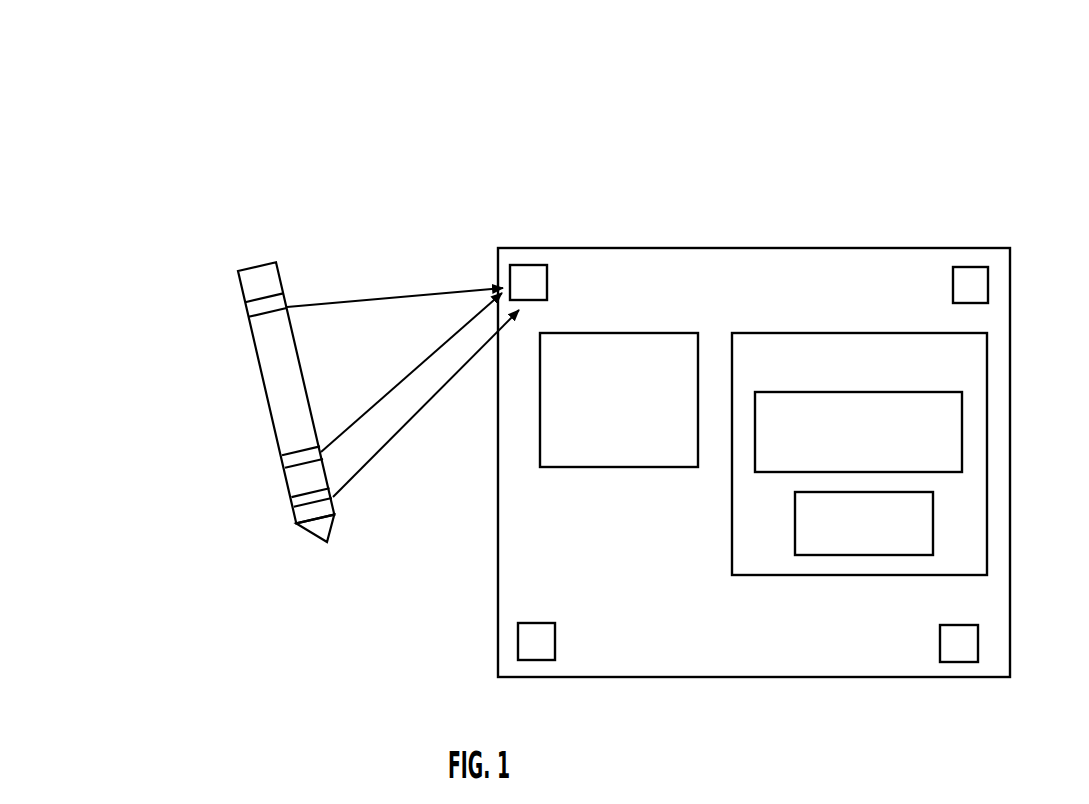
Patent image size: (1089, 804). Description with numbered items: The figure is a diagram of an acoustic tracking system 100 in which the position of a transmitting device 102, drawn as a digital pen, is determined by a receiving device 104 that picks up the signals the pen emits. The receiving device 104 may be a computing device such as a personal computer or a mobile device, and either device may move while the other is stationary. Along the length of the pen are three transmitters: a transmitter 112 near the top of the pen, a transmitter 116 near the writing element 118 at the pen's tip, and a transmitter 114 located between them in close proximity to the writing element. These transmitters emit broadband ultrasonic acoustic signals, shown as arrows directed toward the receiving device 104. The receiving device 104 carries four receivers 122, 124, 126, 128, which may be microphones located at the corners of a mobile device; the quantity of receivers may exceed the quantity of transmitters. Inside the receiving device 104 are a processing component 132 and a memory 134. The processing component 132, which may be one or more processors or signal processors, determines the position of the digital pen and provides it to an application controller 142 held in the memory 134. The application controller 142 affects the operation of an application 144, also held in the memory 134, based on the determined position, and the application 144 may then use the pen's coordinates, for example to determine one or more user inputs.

The acoustic tracking system 100 is at (102, 103).
The transmitting device 102 is at (257, 267).
The receiving device 104 is at (640, 247).
The transmitter 112 is at (250, 317).
The transmitter 114 is at (285, 466).
The transmitter 116 is at (294, 508).
The writing element 118 is at (335, 527).
The receiver 122 is at (530, 263).
The receiver 124 is at (990, 283).
The receiver 126 is at (555, 637).
The receiver 128 is at (978, 642).
The processing component 132 is at (632, 443).
The memory 134 is at (907, 371).
The application controller 142 is at (872, 461).
The application 144 is at (923, 536).